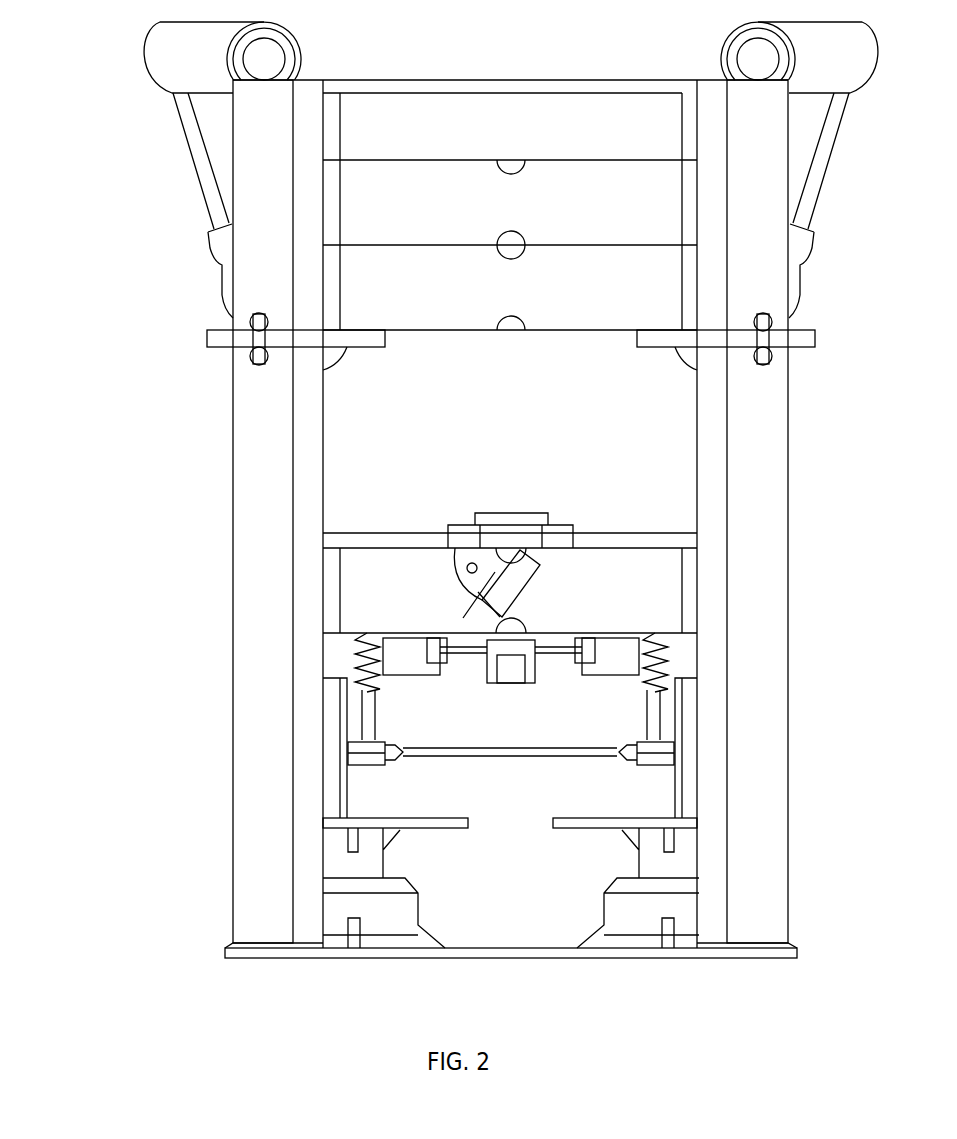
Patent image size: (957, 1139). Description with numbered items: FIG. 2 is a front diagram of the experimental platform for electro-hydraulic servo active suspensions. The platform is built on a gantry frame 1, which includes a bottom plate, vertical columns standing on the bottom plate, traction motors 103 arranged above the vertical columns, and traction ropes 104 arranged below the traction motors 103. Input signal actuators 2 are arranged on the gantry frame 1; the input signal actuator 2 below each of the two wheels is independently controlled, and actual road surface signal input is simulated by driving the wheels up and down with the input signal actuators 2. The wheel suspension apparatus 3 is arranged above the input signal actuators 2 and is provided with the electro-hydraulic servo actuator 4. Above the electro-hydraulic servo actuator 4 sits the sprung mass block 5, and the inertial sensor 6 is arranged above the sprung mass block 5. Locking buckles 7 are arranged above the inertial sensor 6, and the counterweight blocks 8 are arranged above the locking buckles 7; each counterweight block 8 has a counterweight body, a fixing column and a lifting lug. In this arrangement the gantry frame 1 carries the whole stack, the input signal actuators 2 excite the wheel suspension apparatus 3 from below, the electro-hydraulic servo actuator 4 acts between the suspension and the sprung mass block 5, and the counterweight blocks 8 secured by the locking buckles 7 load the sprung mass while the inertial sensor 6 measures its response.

The gantry frame 1 is at (440, 957).
The input signal actuator 2 is at (650, 865).
The wheel suspension apparatus 3 is at (345, 752).
The electro-hydraulic servo actuator 4 is at (480, 682).
The sprung mass block 5 is at (438, 608).
The inertial sensor 6 is at (478, 532).
The locking buckle 7 is at (278, 335).
The counterweight block 8 is at (440, 208).
The traction motor 103 is at (273, 50).
The traction rope 104 is at (205, 183).